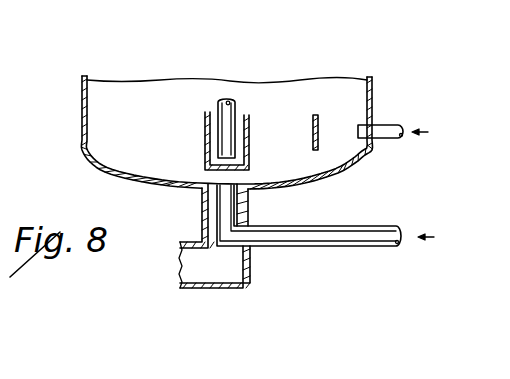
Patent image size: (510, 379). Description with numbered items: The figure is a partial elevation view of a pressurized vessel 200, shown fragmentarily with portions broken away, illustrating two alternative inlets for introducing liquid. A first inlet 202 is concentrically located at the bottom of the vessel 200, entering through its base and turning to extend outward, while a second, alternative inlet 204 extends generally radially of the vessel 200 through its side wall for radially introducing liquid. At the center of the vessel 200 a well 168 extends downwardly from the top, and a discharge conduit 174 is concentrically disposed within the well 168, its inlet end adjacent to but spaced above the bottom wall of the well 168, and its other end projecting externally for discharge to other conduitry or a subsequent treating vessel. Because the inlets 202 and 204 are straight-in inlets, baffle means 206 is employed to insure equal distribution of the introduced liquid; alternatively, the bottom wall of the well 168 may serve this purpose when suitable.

The vessel 200 is at (82, 137).
The well 168 is at (205, 133).
The discharge conduit 174 is at (229, 99).
The baffle means 206 is at (313, 127).
The second inlet 204 is at (388, 125).
The first inlet 202 is at (347, 227).